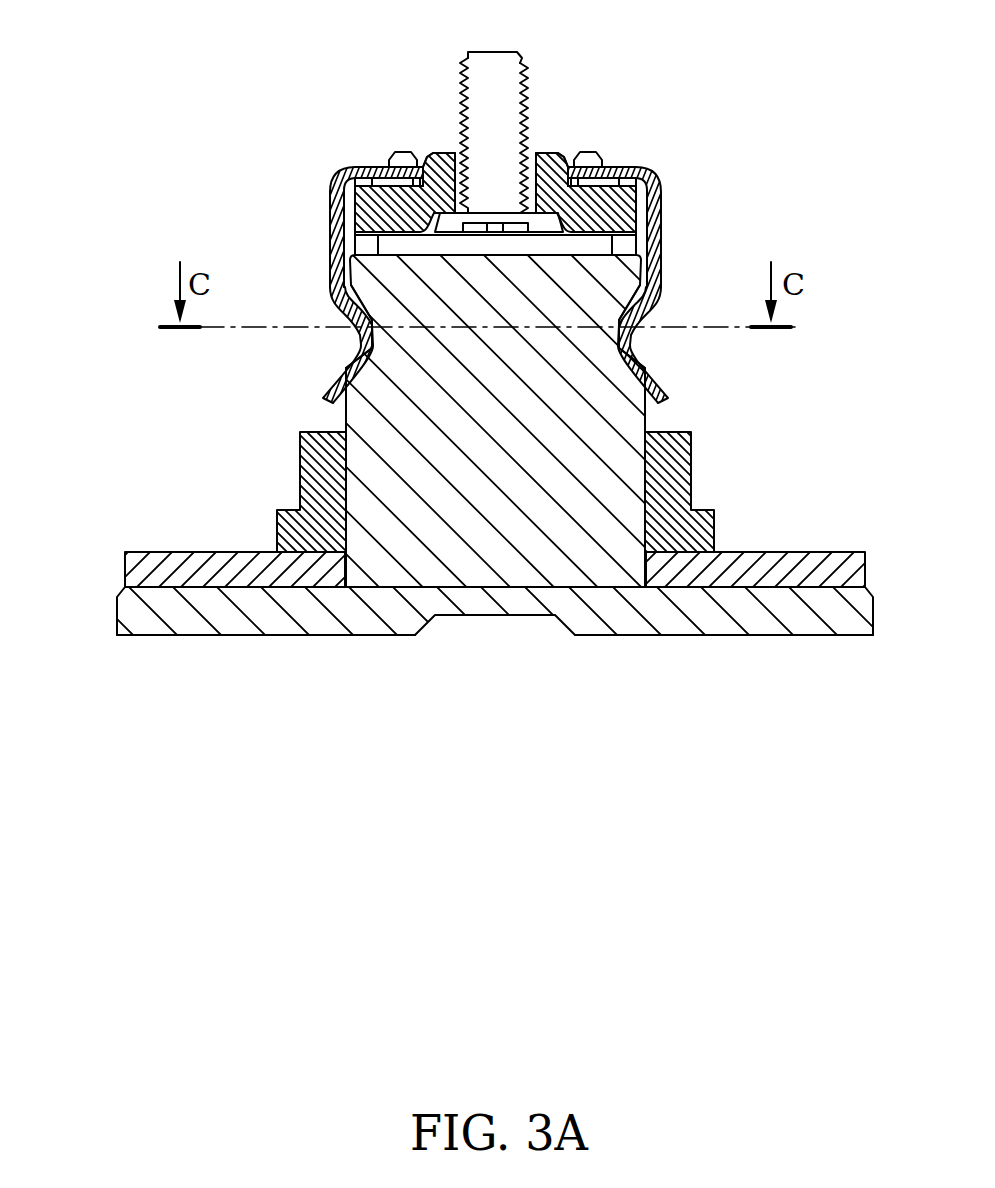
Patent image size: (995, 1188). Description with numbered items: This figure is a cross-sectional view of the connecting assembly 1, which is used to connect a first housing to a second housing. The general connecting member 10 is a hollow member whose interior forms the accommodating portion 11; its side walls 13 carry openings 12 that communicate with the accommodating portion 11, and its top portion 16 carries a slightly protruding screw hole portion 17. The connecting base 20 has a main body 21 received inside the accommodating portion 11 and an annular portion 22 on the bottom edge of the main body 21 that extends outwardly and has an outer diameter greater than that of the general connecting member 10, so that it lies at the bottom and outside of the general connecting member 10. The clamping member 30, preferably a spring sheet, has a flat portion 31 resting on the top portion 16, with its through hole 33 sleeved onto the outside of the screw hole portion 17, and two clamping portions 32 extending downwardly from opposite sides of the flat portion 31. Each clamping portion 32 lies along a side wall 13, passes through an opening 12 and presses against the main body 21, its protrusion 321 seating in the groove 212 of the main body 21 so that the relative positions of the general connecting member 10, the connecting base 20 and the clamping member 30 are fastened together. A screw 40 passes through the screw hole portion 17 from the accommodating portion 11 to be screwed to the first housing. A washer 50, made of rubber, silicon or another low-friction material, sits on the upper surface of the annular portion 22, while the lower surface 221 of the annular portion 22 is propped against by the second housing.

The connecting assembly 1 is at (287, 62).
The general connecting member 10 is at (545, 173).
The accommodating portion 11 is at (332, 414).
The opening 12 is at (338, 241).
The side wall 13 is at (637, 220).
The top portion 16 is at (368, 166).
The screw hole portion 17 is at (531, 160).
The connecting base 20 is at (505, 662).
The main body 21 is at (475, 421).
The annular portion 22 is at (225, 612).
The groove 212 is at (362, 337).
The lower surface 221 is at (792, 637).
The clamping member 30 is at (318, 163).
The flat portion 31 is at (372, 177).
The clamping portion 32 is at (332, 210).
The protrusion 321 is at (337, 312).
The through hole 33 is at (421, 176).
The screw 40 is at (477, 63).
The washer 50 is at (140, 572).